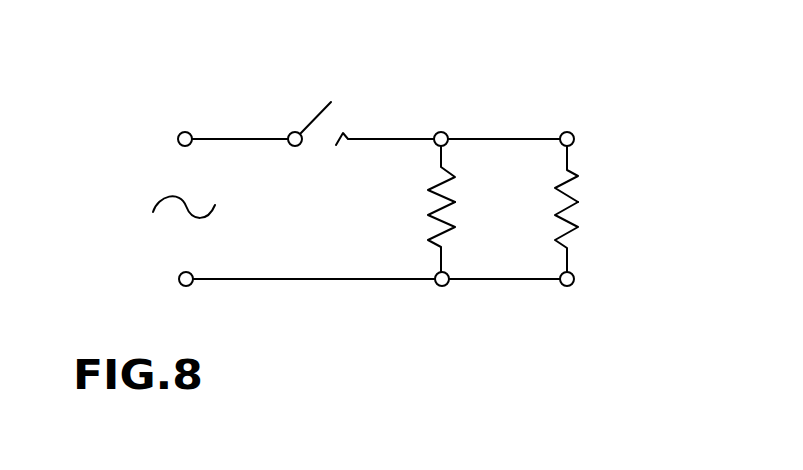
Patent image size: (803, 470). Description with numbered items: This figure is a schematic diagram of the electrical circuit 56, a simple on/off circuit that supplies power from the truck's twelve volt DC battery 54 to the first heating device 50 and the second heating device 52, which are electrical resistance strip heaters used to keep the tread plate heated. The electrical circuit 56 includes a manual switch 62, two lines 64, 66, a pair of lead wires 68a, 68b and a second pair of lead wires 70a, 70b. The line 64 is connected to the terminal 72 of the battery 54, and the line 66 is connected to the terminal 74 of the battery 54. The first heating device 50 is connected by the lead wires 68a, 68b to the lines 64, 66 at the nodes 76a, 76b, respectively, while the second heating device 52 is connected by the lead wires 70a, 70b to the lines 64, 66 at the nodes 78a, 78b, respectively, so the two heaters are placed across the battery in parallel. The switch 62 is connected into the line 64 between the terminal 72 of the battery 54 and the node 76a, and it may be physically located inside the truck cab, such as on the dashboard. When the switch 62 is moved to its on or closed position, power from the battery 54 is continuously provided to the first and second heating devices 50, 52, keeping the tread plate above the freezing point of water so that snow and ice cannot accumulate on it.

The first heating device 50 is at (438, 174).
The second heating device 52 is at (637, 209).
The battery 54 is at (126, 194).
The electrical circuit 56 is at (211, 74).
The manual switch 62 is at (301, 86).
The line 64 is at (241, 138).
The line 66 is at (315, 280).
The lead wire 68a is at (440, 157).
The lead wire 68b is at (440, 262).
The lead wire 70a is at (568, 160).
The lead wire 70b is at (570, 262).
The terminal 72 is at (181, 134).
The terminal 74 is at (183, 286).
The node 76a is at (441, 132).
The node 76b is at (442, 286).
The node 78a is at (568, 132).
The node 78b is at (570, 286).